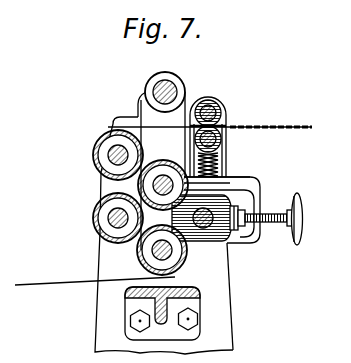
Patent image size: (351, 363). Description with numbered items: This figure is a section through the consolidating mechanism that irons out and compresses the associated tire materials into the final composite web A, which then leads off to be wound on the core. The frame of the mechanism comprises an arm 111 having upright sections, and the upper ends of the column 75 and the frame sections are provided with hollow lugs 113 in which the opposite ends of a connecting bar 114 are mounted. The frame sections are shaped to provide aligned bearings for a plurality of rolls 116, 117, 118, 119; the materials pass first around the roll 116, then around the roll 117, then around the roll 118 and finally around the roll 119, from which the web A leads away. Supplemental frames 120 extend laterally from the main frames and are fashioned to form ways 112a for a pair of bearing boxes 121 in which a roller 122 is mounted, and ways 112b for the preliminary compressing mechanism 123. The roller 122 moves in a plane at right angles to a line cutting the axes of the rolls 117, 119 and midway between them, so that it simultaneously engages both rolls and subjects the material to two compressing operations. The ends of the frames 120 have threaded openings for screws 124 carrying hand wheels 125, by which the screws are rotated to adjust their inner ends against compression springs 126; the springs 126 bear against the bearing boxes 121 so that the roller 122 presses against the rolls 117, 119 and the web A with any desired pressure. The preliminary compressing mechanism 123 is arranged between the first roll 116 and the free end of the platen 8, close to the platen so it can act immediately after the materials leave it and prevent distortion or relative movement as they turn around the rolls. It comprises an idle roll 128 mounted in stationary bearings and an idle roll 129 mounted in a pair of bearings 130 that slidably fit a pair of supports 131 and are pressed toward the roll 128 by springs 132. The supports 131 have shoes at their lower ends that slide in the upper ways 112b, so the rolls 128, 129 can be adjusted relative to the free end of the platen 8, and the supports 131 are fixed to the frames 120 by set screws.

The column 75 is at (228, 328).
The arm 111 is at (125, 294).
The hollow lugs 113 is at (177, 84).
The connecting bar 114 is at (150, 89).
The roll 116 is at (95, 150).
The roll 117 is at (162, 160).
The roll 118 is at (93, 221).
The roll 119 is at (137, 258).
The supplemental frames 120 is at (240, 248).
The bearing boxes 121 is at (256, 191).
The roller 122 is at (205, 238).
The preliminary compressing mechanism 123 is at (222, 113).
The screws 124 is at (271, 223).
The hand wheels 125 is at (301, 230).
The compression springs 126 is at (238, 214).
The idle roll 128 is at (211, 103).
The idle roll 129 is at (224, 140).
The bearings 130 is at (224, 150).
The supports 131 is at (226, 126).
The springs 132 is at (216, 168).
The ways 112a is at (240, 186).
The ways 112b is at (247, 178).
The platen 8 is at (219, 129).
The composite web A is at (95, 275).